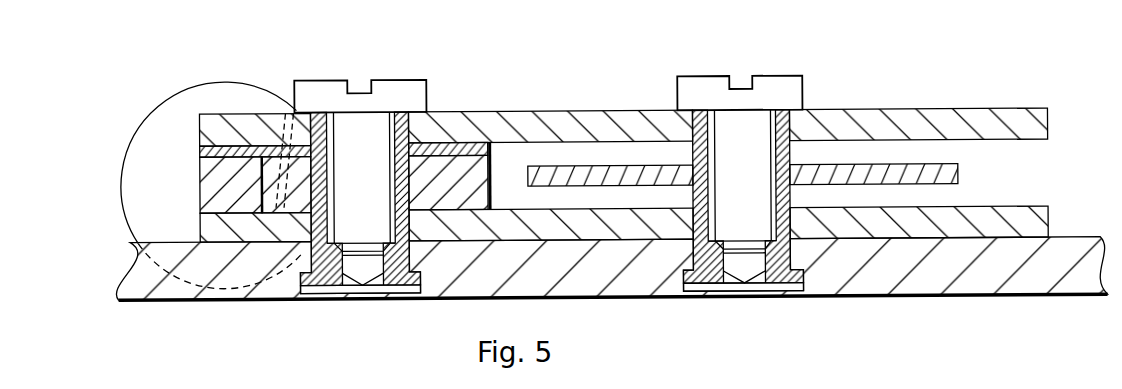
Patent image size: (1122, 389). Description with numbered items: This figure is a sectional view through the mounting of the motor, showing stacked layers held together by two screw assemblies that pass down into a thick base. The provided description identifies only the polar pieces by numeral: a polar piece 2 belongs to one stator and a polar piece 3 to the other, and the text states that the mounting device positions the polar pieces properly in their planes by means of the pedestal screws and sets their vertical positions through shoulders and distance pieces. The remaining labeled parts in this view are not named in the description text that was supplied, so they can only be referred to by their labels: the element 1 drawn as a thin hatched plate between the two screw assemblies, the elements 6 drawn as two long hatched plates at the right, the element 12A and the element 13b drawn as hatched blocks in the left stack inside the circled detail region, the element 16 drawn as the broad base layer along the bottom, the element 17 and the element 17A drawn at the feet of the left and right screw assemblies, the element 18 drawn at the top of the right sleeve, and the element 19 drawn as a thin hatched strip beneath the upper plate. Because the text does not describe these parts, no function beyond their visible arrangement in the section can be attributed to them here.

The printed circuit board 1 is at (943, 170).
The polar piece 2 is at (217, 93).
The polar piece 3 is at (287, 190).
The ground plates 6 is at (1030, 127).
The upper insulating plate 12A is at (248, 123).
The lower insulating plate 13b is at (240, 228).
The base plate 16 is at (988, 272).
The mounting screw 17 is at (317, 270).
The mounting screw 17A is at (700, 275).
The spacer sleeve 18 is at (788, 138).
The conductive layer 19 is at (443, 152).